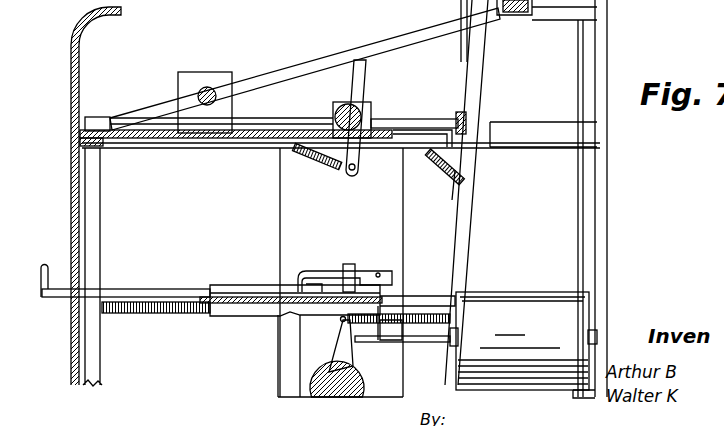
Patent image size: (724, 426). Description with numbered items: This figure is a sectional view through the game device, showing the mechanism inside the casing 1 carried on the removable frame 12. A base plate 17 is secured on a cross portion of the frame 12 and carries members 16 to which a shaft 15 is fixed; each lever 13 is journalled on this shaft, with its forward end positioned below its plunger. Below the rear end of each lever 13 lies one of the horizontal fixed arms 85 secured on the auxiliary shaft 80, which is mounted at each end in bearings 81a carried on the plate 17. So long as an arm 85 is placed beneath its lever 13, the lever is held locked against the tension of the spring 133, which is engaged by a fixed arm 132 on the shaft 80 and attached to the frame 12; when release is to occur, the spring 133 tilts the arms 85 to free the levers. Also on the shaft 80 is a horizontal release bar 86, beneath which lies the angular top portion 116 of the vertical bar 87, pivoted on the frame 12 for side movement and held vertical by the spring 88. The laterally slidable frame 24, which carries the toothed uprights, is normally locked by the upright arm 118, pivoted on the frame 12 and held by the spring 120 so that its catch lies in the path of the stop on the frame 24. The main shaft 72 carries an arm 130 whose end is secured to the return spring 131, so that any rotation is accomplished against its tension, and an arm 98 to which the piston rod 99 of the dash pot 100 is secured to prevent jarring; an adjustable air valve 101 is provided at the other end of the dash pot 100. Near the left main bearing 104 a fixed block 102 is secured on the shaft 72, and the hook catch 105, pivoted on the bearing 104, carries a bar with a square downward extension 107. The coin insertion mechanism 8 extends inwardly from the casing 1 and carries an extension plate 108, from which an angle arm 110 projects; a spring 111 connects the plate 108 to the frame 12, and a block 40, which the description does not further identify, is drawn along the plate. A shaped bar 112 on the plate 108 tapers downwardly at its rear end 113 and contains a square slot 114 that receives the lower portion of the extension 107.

The casing 1 is at (70, 99).
The coin insertion mechanism 8 is at (43, 298).
The frame 12 is at (266, 122).
The lever 13 is at (301, 70).
The shaft 15 is at (198, 93).
The member 16 is at (212, 72).
The base plate 17 is at (203, 140).
The frame 24 is at (508, 14).
The slide block 40 is at (244, 316).
The main shaft 72 is at (341, 398).
The auxiliary shaft 80 is at (374, 124).
The bearing 81a is at (334, 108).
The fixed arm 85 is at (362, 87).
The release bar 86 is at (420, 116).
The vertical bar 87 is at (456, 193).
The spring 88 is at (458, 118).
The arm 98 is at (344, 350).
The piston rod 99 is at (442, 330).
The dash pot 100 is at (572, 318).
The adjustable air valve 101 is at (598, 336).
The fixed block 102 is at (334, 336).
The main bearing 104 is at (284, 348).
The hook catch 105 is at (316, 272).
The downward extension 107 is at (351, 264).
The extension plate 108 is at (156, 292).
The angle arm 110 is at (424, 296).
The spring 111 is at (168, 313).
The shaped bar 112 is at (256, 288).
The rear end 113 is at (388, 290).
The square slot 114 is at (312, 287).
The angular top portion 116 is at (440, 131).
The upright arm 118 is at (488, 60).
The spring 120 is at (448, 162).
The arm 130 is at (345, 358).
The spring 131 is at (420, 348).
The fixed arm 132 is at (356, 164).
The spring 133 is at (322, 160).